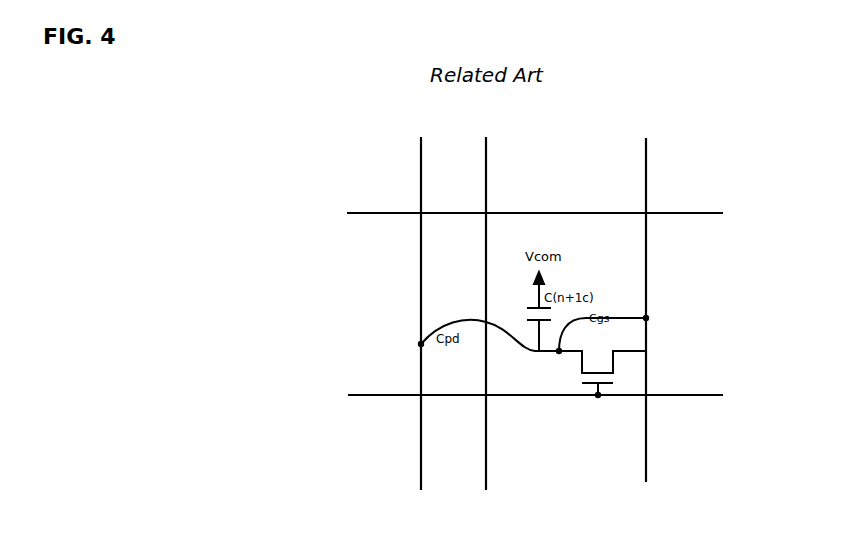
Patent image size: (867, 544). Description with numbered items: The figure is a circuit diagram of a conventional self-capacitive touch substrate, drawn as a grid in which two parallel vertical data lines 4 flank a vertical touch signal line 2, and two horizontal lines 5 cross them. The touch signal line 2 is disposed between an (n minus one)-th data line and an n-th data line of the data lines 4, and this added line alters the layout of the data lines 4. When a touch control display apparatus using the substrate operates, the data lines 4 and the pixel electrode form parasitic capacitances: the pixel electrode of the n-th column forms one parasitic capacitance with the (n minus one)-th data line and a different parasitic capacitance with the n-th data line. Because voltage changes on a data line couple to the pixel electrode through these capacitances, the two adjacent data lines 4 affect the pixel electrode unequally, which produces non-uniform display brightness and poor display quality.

The touch signal lines 2 is at (487, 153).
The data lines 4 is at (421, 159).
The gate lines 5 is at (372, 213).